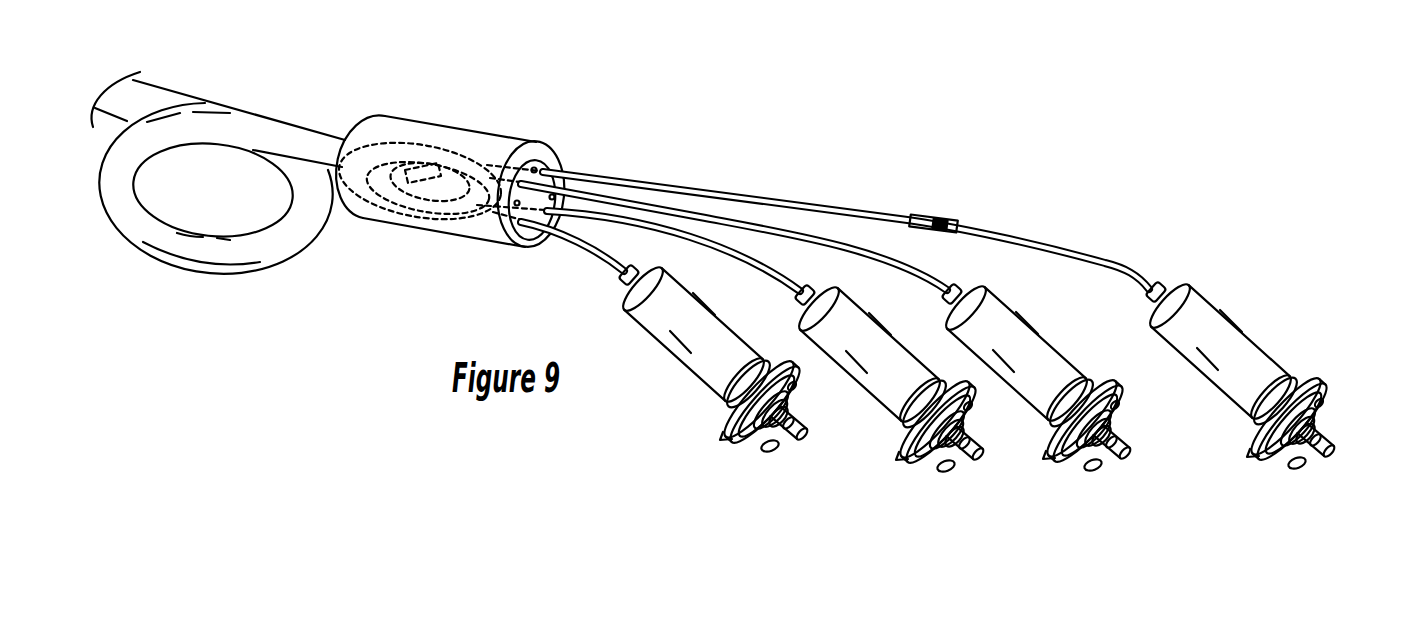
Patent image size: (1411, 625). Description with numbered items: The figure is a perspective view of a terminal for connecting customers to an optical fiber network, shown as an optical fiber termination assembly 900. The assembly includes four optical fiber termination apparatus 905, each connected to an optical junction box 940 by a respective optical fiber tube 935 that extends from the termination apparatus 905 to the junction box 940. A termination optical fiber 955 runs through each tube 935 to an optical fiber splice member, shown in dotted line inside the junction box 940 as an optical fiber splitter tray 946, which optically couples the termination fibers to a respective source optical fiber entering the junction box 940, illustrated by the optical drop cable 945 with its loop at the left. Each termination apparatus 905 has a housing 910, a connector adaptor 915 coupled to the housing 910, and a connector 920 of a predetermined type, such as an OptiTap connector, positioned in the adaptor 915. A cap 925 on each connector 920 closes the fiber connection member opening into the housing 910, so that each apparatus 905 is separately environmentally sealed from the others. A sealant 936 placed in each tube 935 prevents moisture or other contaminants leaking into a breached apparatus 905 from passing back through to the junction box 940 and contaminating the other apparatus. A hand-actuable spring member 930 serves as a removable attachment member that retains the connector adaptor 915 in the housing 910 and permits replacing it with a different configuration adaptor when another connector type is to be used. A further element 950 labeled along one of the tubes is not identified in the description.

The optical fiber termination assembly 900 is at (612, 125).
The optical fiber termination apparatus 905 is at (700, 470).
The housing 910 is at (700, 387).
The connector adaptor 915 is at (1327, 407).
The connector 920 is at (1324, 428).
The cap 925 is at (1333, 456).
The spring member 930 is at (1307, 380).
The optical fiber tube 935 is at (835, 202).
The sealant 936 is at (947, 225).
The optical junction box 940 is at (508, 148).
The optical drop cable 945 is at (293, 123).
The optical fiber splitter tray 946 is at (410, 142).
The lead wire 950 is at (590, 237).
The termination optical fiber 955 is at (927, 218).